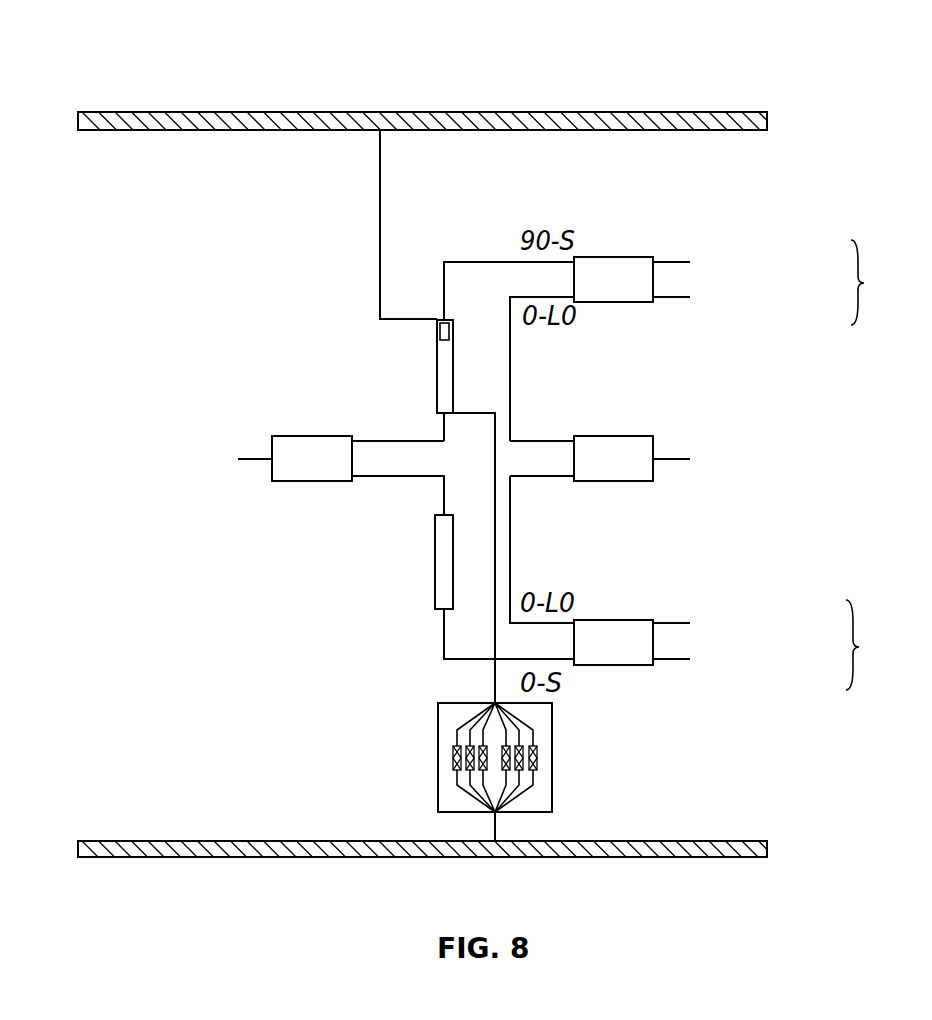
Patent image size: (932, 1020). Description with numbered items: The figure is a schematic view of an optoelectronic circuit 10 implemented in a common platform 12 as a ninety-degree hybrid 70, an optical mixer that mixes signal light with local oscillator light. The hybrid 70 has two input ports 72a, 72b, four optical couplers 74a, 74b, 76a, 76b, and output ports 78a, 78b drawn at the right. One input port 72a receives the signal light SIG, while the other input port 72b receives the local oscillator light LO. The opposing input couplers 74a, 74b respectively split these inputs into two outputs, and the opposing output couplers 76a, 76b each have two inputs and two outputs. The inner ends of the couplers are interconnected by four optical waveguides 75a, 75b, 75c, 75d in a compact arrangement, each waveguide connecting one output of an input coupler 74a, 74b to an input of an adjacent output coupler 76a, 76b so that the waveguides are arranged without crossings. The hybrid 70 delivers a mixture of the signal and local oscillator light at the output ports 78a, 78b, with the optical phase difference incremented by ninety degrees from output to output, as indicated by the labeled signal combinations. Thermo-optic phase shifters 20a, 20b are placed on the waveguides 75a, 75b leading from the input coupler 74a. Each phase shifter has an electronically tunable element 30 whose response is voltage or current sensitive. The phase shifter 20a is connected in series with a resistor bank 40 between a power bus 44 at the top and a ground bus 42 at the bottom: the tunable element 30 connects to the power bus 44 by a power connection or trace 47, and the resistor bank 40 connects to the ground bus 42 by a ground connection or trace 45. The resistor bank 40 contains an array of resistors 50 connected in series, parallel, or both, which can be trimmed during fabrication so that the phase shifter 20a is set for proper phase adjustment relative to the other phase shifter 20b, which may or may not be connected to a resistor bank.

The optoelectronic circuit 10 is at (96, 71).
The common platform 12 is at (437, 83).
The power bus 44 is at (680, 112).
The ground bus 42 is at (688, 857).
The 90-degree hybrid 70 is at (227, 291).
The electronically tunable element 30 is at (437, 331).
The thermo-optic phase shifter 20a is at (411, 359).
The thermo-optic phase shifter 20b is at (428, 569).
The optical waveguide 75a is at (388, 440).
The optical waveguide 75b is at (393, 477).
The optical waveguide 75c is at (527, 440).
The optical waveguide 75d is at (533, 478).
The input port 72a is at (255, 460).
The input port 72b is at (672, 460).
The input coupler 74a is at (325, 482).
The input coupler 74b is at (614, 482).
The output coupler 76a is at (617, 303).
The output coupler 76b is at (617, 666).
The output port 78a is at (808, 282).
The output port 78b is at (803, 645).
The power connection or trace 47 is at (494, 694).
The resistor bank 40 is at (482, 757).
The resistors 50 is at (538, 757).
The ground connection or trace 45 is at (495, 826).